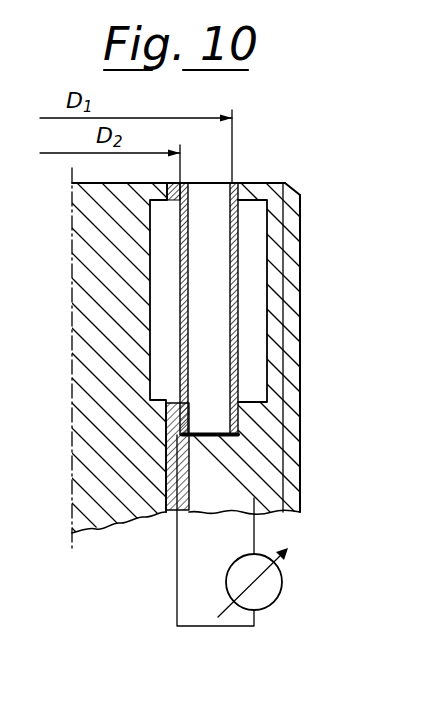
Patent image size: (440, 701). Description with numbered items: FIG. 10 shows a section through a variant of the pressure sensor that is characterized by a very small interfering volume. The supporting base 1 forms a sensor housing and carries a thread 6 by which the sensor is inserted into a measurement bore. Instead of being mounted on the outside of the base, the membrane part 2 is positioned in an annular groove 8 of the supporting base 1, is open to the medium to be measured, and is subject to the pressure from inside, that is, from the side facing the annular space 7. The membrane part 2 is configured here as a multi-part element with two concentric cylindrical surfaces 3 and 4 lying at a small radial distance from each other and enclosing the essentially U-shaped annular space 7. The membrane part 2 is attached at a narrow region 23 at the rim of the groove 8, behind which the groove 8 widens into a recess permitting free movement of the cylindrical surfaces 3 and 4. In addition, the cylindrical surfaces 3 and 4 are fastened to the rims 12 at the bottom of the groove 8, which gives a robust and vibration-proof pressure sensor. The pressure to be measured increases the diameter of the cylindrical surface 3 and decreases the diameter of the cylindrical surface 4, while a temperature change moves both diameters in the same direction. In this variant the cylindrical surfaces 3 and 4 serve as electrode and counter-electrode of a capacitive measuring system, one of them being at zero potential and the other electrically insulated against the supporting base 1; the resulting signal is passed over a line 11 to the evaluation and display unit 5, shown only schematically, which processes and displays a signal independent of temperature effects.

The supporting base 1 is at (110, 305).
The membrane part 2 is at (204, 261).
The cylindrical surface 3 is at (238, 266).
The cylindrical surface 4 is at (184, 260).
The evaluation and display unit 5 is at (282, 579).
The thread 6 is at (290, 373).
The annular space 7 is at (210, 305).
The annular groove 8 is at (270, 323).
The line 11 is at (177, 547).
The rims 12 is at (165, 418).
The narrow region 23 is at (268, 182).